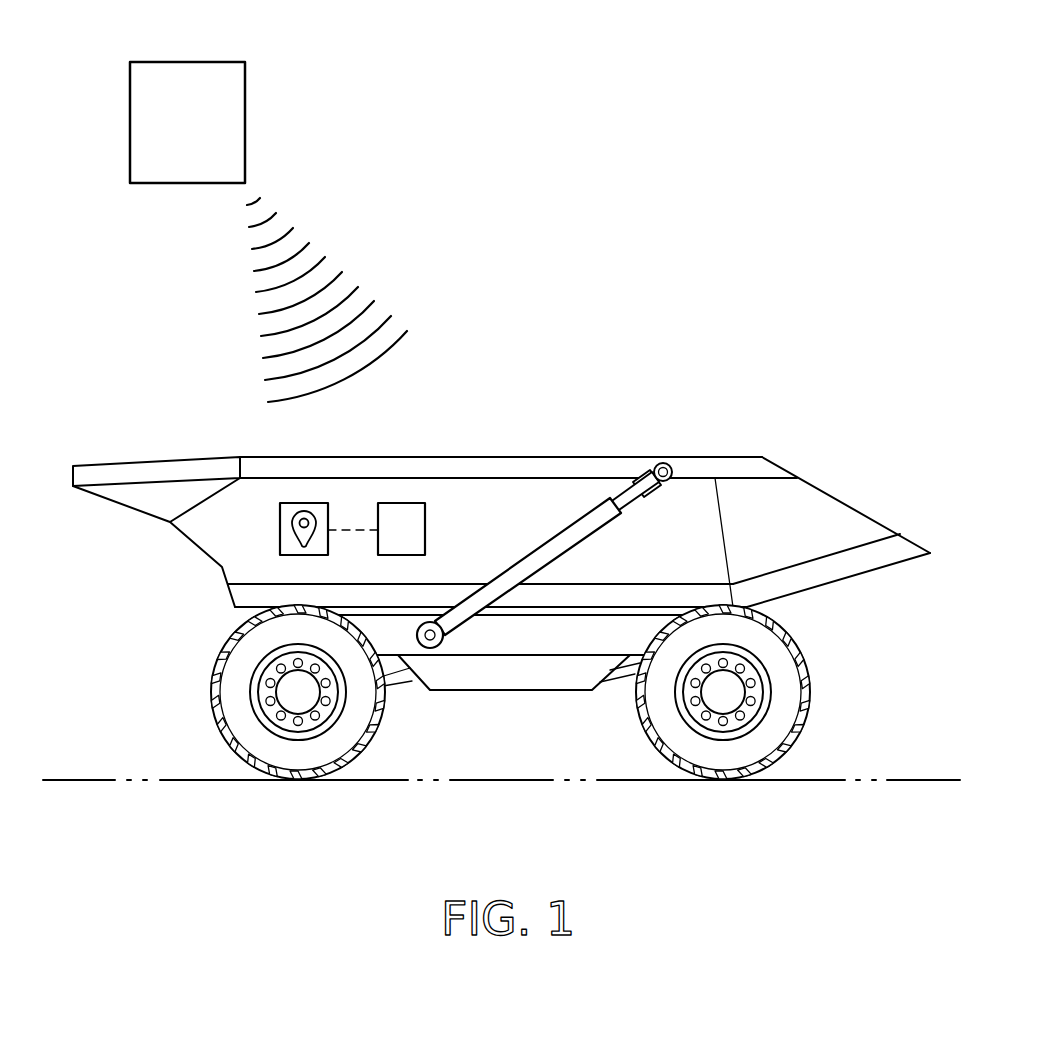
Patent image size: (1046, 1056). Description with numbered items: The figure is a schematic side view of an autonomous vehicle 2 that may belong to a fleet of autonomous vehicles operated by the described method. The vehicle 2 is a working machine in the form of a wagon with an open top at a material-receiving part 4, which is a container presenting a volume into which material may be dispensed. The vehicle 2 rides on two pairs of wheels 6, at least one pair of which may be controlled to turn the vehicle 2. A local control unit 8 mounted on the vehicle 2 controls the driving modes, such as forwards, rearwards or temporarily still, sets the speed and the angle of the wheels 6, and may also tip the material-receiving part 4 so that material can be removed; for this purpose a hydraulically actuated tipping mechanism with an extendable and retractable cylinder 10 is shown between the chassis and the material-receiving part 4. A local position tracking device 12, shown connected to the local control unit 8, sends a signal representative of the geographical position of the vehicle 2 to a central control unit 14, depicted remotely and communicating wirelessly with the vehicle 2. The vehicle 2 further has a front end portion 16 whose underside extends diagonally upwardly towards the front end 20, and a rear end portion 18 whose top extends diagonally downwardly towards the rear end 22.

The vehicle 2 is at (505, 549).
The material-receiving part 4 is at (512, 505).
The wheels 6 is at (285, 748).
The local control unit 8 is at (398, 503).
The cylinder 10 is at (573, 537).
The local position tracking device 12 is at (300, 503).
The central control unit 14 is at (187, 125).
The front end portion 16 is at (105, 490).
The rear end portion 18 is at (854, 500).
The front end 20 is at (72, 474).
The rear end 22 is at (930, 553).